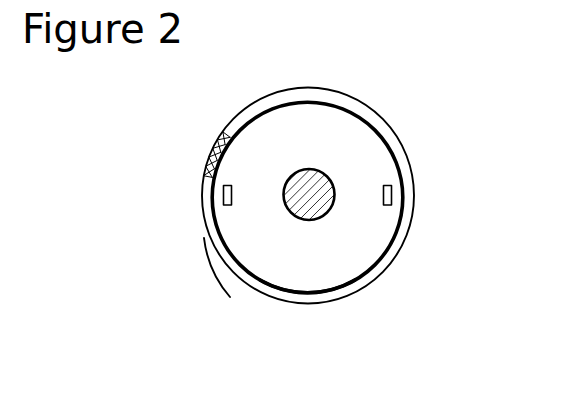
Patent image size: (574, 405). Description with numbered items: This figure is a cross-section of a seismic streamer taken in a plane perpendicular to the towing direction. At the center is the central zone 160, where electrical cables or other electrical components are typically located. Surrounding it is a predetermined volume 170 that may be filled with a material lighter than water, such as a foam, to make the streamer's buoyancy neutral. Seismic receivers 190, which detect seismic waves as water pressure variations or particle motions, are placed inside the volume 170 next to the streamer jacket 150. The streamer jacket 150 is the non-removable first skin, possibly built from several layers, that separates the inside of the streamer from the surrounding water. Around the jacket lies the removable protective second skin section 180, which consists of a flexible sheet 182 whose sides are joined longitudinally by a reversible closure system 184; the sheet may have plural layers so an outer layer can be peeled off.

The streamer jacket 150 is at (372, 268).
The central zone 160 is at (315, 188).
The predetermined volume 170 is at (315, 275).
The removable protective second skin section 180 is at (410, 205).
The flexible sheet 182 is at (213, 252).
The reversible closure system 184 is at (205, 161).
The seismic receivers 190 is at (228, 206).